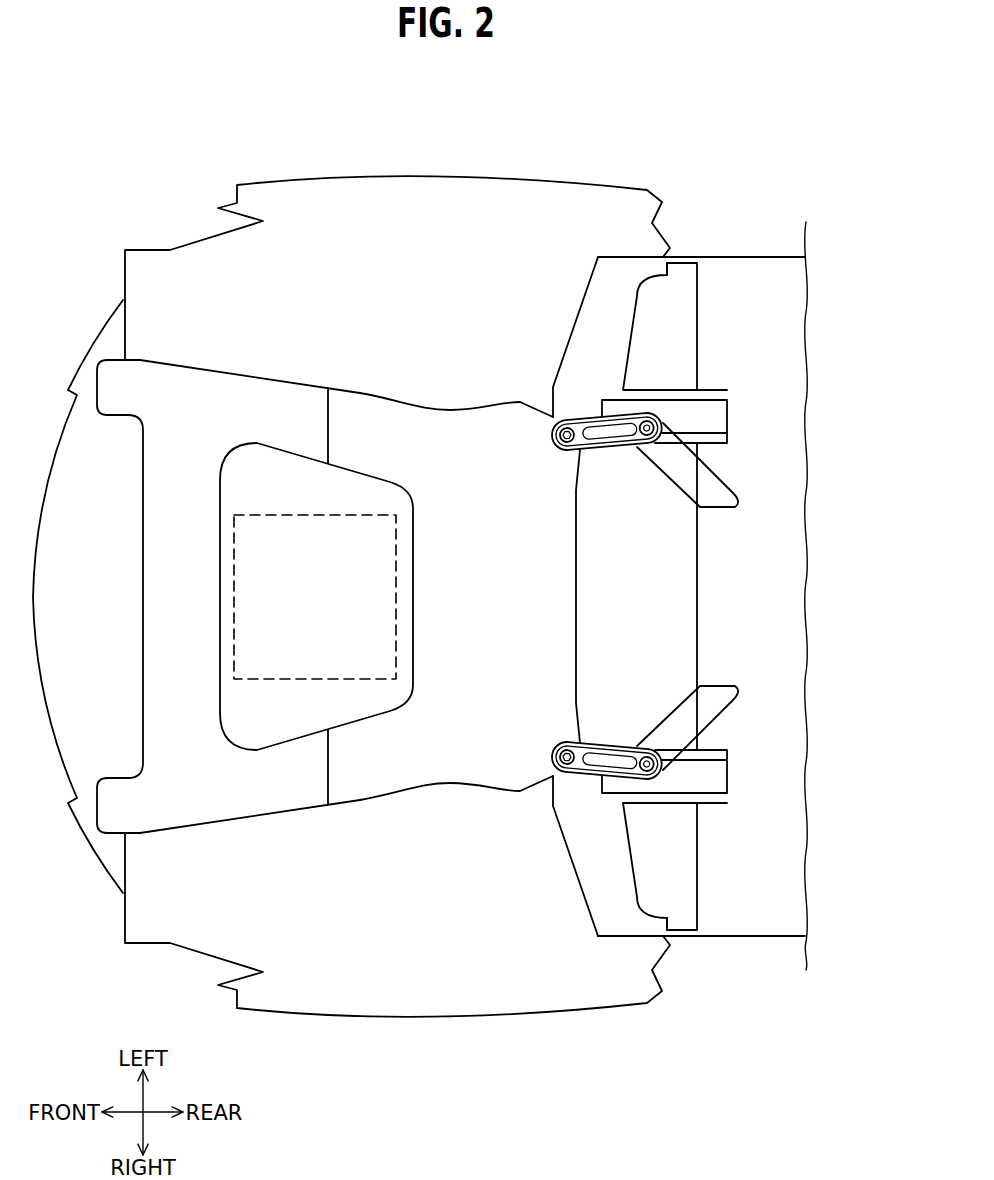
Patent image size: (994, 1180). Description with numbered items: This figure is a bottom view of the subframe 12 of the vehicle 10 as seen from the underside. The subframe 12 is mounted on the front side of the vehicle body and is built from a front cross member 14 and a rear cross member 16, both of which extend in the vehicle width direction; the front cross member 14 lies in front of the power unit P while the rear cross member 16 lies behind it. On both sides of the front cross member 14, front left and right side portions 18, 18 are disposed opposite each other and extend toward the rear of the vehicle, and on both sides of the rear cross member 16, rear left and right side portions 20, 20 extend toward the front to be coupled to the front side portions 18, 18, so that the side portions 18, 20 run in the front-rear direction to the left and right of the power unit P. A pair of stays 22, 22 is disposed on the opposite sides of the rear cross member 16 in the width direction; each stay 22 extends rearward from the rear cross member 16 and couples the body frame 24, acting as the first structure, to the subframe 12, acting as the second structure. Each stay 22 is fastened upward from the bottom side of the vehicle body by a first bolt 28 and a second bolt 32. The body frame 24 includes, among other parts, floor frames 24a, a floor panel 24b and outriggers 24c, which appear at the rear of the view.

The vehicle 10 is at (533, 137).
The subframe 12 is at (368, 373).
The front cross member 14 is at (130, 595).
The rear cross member 16 is at (590, 597).
The front side portion 18 is at (231, 373).
The rear side portion 20 is at (352, 471).
The stay 22 is at (607, 458).
The body frame 24 is at (747, 953).
The floor frame 24a is at (730, 418).
The floor panel 24b is at (780, 595).
The outrigger 24c is at (721, 508).
The first bolt 28 is at (662, 378).
The second bolt 32 is at (553, 461).